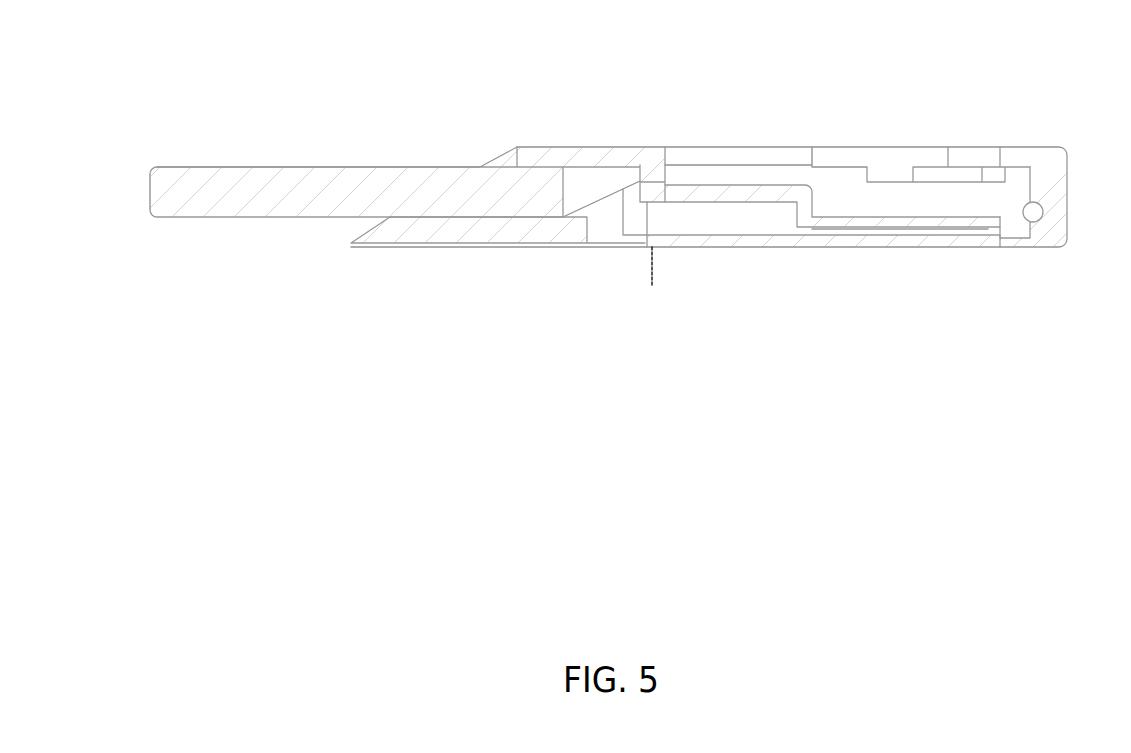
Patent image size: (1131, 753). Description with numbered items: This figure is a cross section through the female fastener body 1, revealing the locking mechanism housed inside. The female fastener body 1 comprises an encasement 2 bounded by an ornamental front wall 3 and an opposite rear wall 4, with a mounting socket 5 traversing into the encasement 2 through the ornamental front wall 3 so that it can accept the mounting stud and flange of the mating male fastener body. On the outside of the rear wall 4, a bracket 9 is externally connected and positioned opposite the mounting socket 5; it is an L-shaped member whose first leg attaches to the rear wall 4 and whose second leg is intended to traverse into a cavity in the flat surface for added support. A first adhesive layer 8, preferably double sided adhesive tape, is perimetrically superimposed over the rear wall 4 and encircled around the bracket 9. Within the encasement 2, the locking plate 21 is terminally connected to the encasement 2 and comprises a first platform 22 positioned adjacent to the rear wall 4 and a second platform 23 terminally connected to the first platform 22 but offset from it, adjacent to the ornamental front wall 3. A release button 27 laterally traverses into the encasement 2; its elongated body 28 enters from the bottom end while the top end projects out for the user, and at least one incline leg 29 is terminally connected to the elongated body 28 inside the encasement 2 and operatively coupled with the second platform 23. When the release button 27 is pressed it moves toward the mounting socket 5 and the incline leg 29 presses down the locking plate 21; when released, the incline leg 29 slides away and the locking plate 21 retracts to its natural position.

The female fastener body 1 is at (883, 92).
The encasement 2 is at (1063, 173).
The ornamental front wall 3 is at (592, 147).
The rear wall 4 is at (1060, 248).
The mounting socket 5 is at (835, 158).
The first adhesive layer 8 is at (425, 248).
The bracket 9 is at (652, 288).
The locking plate 21 is at (817, 205).
The first platform 22 is at (959, 228).
The second platform 23 is at (708, 186).
The release button 27 is at (140, 196).
The elongated body 28 is at (245, 218).
The incline leg 29 is at (600, 201).